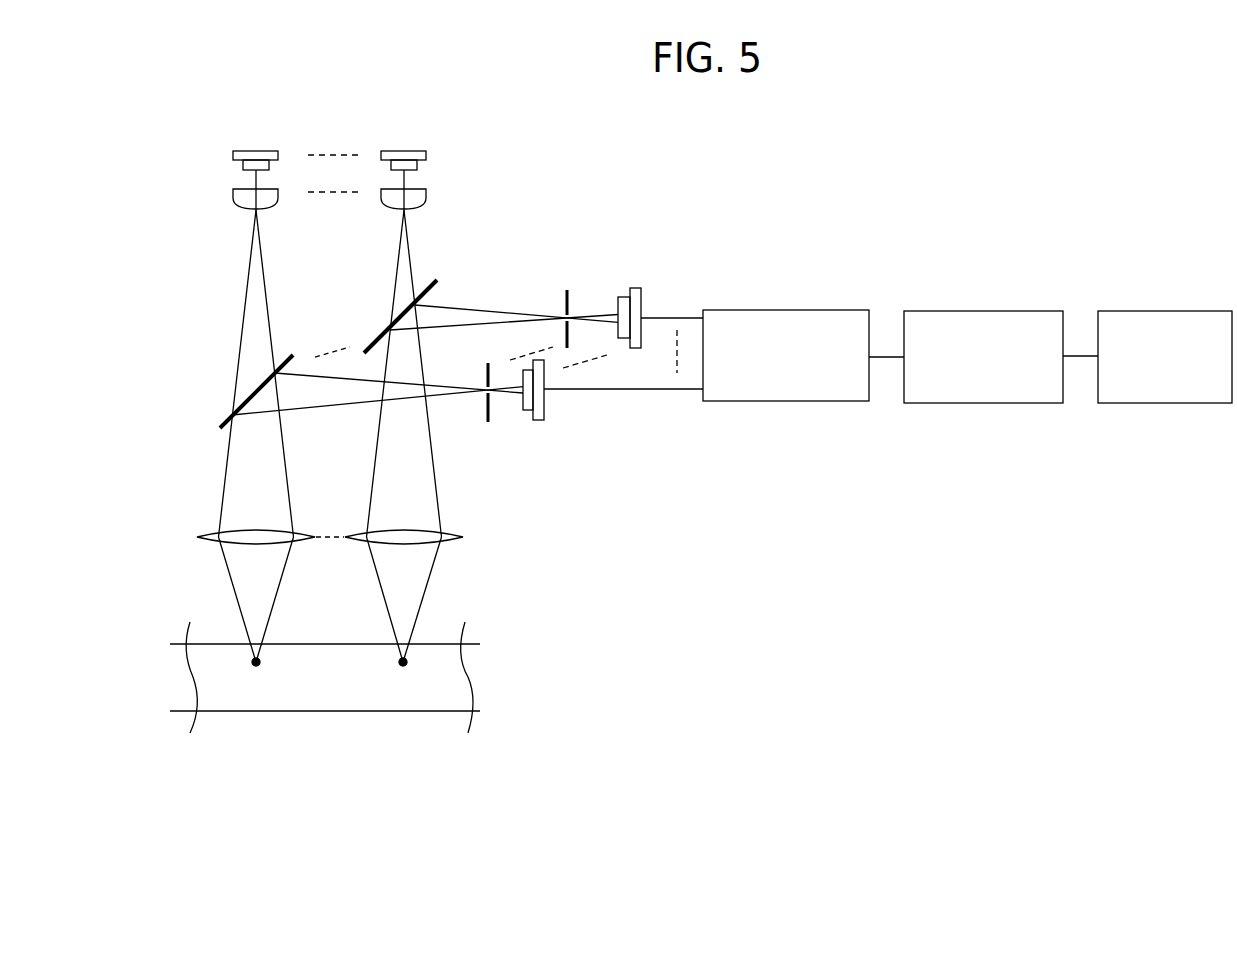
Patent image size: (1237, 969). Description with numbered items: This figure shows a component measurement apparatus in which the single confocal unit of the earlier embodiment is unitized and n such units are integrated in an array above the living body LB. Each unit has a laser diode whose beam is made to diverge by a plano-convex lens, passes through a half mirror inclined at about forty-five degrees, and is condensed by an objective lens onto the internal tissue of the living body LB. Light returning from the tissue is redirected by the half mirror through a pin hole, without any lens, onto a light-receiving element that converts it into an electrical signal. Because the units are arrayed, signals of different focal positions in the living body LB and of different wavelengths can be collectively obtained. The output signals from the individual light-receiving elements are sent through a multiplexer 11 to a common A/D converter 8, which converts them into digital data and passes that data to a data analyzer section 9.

The multiplexer 11 is at (803, 310).
The A/D converter 8 is at (1003, 310).
The data analyzer section 9 is at (1175, 310).
The living body LB is at (460, 675).